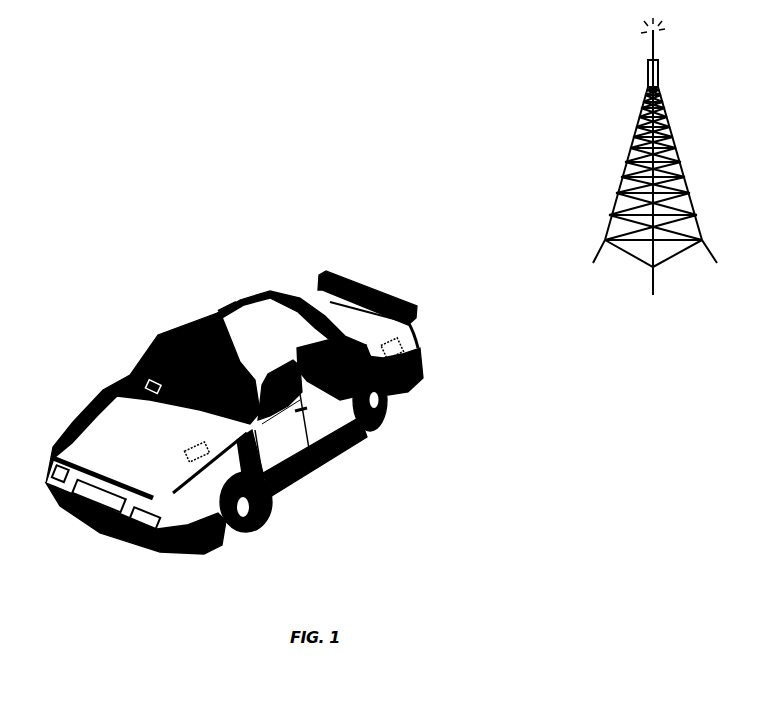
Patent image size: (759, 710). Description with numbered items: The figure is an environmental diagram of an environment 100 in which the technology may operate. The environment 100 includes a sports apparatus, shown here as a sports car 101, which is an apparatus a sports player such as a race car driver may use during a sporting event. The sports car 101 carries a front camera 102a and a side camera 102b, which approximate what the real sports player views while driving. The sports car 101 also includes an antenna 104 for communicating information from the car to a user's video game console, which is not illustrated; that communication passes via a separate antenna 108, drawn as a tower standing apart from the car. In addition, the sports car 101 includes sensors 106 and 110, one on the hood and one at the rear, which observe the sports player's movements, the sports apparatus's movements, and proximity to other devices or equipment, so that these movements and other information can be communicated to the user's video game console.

The environment 100 is at (136, 130).
The sports car 101 is at (121, 533).
The front camera 102a is at (137, 378).
The side camera 102b is at (314, 396).
The antenna 104 is at (241, 291).
The sensor 106 is at (190, 452).
The antenna 108 is at (621, 203).
The sensor 110 is at (418, 338).